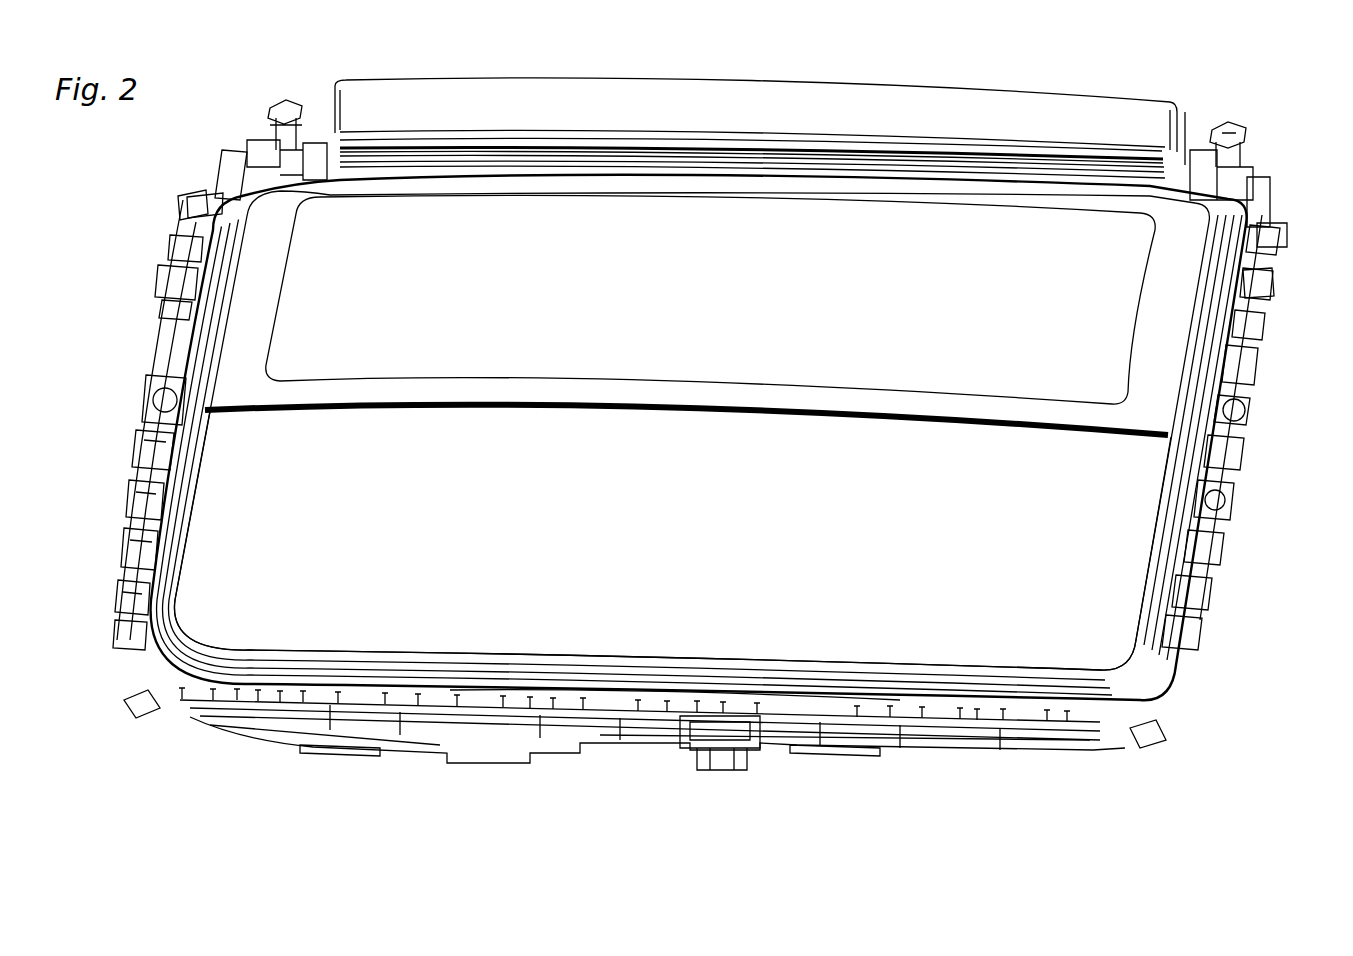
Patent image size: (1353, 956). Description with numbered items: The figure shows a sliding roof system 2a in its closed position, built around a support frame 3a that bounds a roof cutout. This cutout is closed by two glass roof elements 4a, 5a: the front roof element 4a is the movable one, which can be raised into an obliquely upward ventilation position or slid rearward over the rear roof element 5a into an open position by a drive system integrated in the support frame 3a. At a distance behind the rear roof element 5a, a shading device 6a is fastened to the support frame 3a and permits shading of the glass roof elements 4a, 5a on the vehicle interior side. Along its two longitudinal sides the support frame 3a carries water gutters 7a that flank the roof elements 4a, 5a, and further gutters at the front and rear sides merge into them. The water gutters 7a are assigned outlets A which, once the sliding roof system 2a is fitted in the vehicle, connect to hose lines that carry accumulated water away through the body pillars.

The sliding roof system 2a is at (222, 126).
The support frame 3a is at (146, 364).
The movable roof element 4a is at (685, 589).
The rear roof element 5a is at (700, 336).
The shading device 6a is at (1150, 96).
The water gutter 7a is at (188, 292).
The outlet A is at (137, 718).